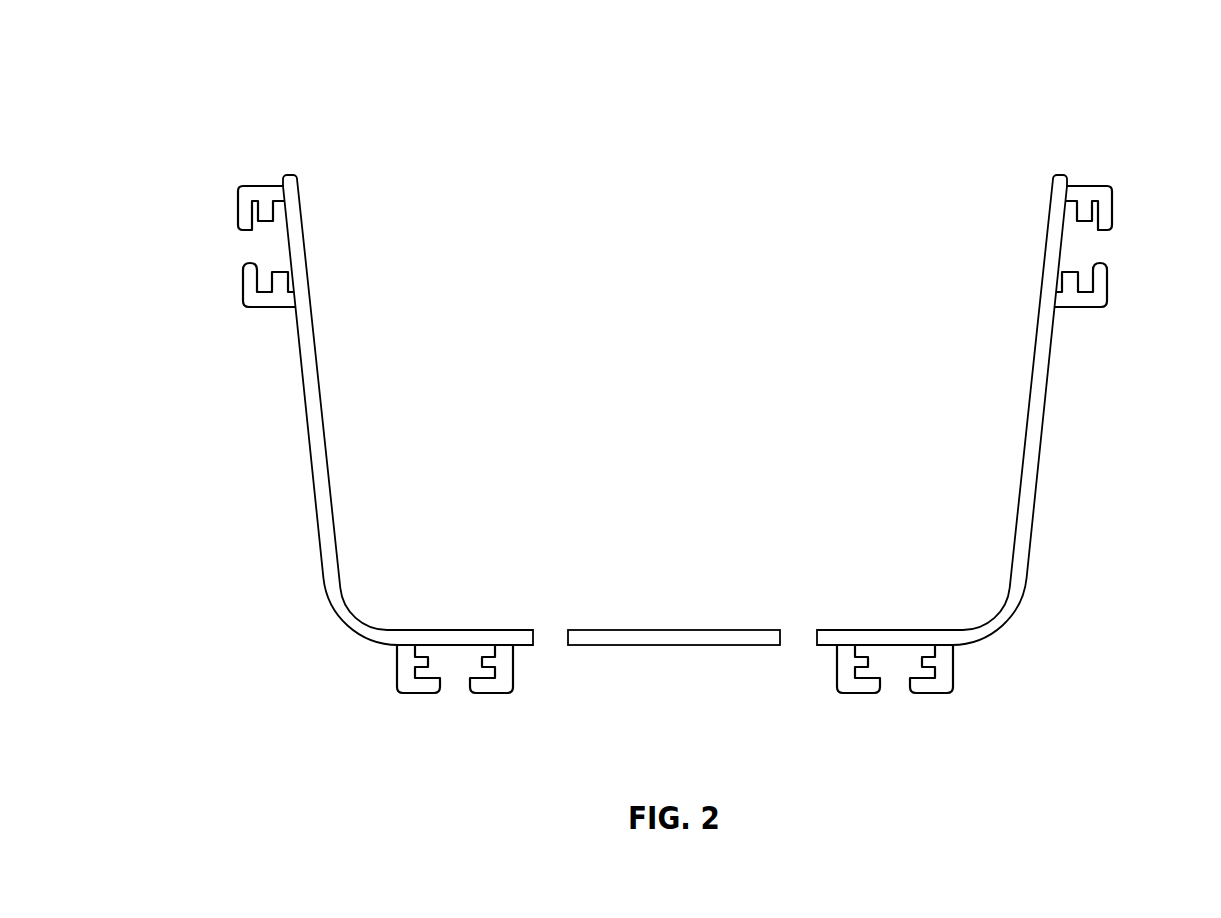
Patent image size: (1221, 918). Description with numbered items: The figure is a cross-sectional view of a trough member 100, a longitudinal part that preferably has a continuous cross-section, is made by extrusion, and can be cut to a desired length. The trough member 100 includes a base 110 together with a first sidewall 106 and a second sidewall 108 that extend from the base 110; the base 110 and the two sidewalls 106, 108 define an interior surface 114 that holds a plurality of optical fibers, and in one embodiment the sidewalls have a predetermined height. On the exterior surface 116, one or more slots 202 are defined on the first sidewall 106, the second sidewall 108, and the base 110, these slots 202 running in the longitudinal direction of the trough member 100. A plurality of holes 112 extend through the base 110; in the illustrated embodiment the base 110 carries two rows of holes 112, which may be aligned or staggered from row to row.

The trough member 100 is at (248, 51).
The first sidewall 106 is at (1029, 398).
The second sidewall 108 is at (319, 383).
The base 110 is at (672, 629).
The holes 112 is at (548, 646).
The interior cavity 114 is at (579, 198).
The bend 116 is at (1024, 662).
The slots 202 is at (242, 249).